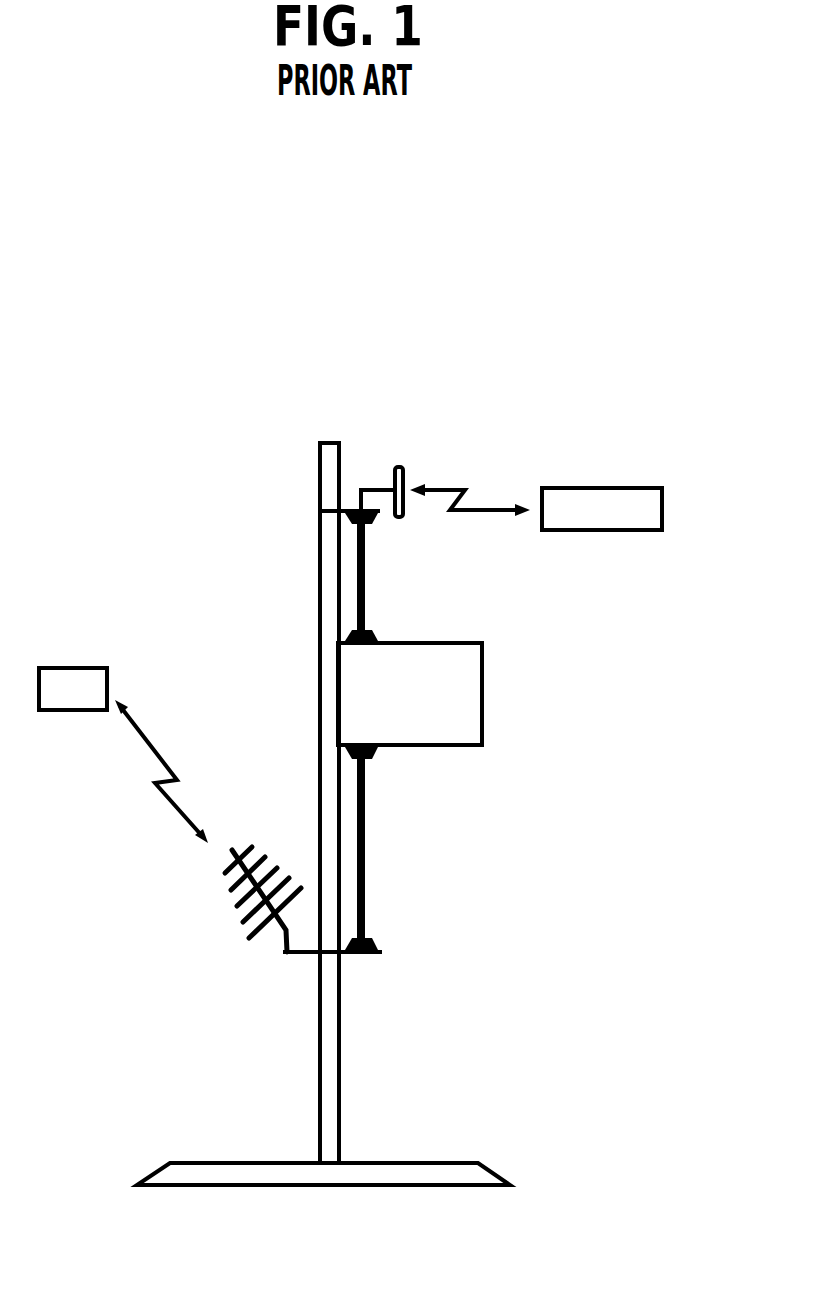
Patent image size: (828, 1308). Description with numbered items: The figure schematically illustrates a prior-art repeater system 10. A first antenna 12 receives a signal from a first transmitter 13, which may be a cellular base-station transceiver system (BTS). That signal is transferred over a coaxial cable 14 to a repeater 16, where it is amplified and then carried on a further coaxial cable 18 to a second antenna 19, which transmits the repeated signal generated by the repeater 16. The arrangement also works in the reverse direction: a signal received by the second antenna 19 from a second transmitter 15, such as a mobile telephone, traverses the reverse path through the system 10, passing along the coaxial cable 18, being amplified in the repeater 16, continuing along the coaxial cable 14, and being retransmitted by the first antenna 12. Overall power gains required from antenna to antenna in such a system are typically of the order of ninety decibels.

The repeater system 10 is at (518, 825).
The first antenna 12 is at (255, 940).
The first transmitter 13 is at (77, 668).
The coaxial cable 14 is at (365, 830).
The second transmitter 15 is at (633, 488).
The repeater 16 is at (405, 745).
The coaxial cable 18 is at (364, 572).
The second antenna 19 is at (401, 468).